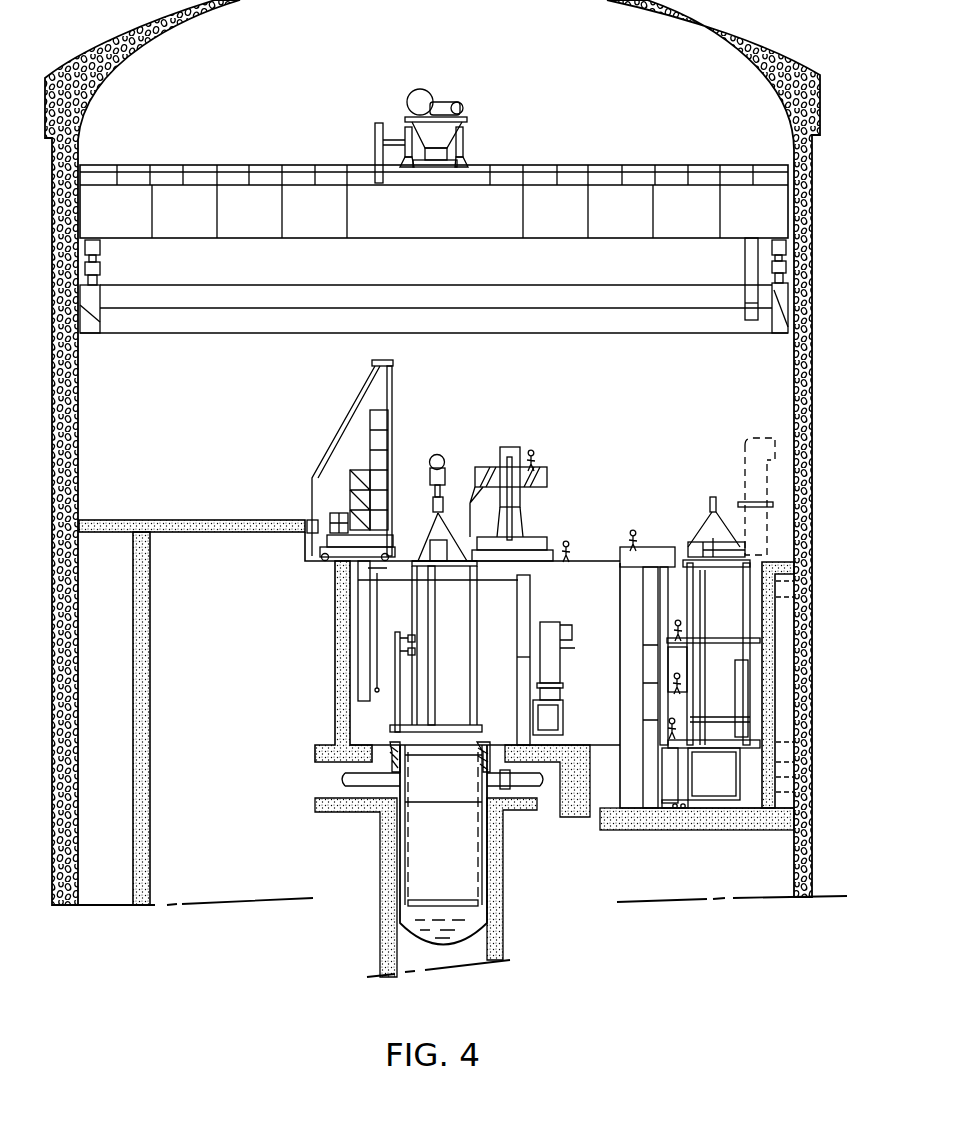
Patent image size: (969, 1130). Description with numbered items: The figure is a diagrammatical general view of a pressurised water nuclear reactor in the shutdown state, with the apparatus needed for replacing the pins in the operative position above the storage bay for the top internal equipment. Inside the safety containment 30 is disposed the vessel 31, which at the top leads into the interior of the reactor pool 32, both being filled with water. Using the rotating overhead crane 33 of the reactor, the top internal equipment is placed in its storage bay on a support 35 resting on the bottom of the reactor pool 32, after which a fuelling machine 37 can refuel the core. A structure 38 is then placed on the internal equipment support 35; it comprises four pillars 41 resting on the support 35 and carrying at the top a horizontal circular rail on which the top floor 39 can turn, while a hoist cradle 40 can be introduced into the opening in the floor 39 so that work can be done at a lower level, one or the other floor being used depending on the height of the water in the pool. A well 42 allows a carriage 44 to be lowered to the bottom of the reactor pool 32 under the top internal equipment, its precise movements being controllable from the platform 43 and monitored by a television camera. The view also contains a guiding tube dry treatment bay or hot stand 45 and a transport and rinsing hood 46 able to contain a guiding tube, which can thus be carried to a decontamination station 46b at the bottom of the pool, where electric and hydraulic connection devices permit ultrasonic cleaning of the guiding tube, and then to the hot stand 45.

The safety containment 30 is at (818, 821).
The vessel 31 is at (400, 868).
The reactor pool 32 is at (353, 652).
The rotating overhead crane 33 is at (442, 160).
The support 35 is at (728, 777).
The fuelling machine 37 is at (332, 485).
The structure 38 is at (748, 705).
The top floor 39 is at (727, 638).
The hoist cradle 40 is at (643, 767).
The pillars 41 is at (733, 740).
The well 42 is at (667, 605).
The platform 43 is at (648, 545).
The carriage 44 is at (690, 817).
The hot stand 45 is at (483, 473).
The transport and rinsing hood 46 is at (745, 482).
The decontamination station 46b is at (552, 692).